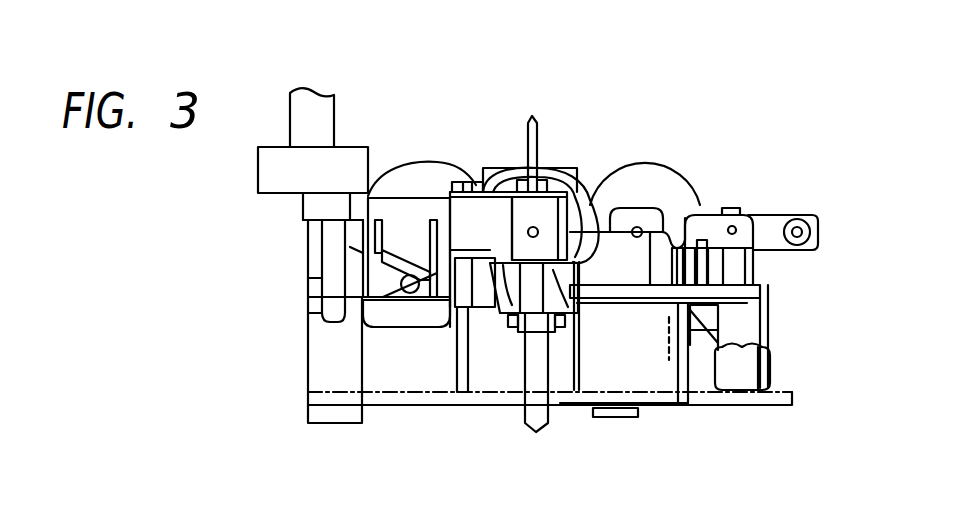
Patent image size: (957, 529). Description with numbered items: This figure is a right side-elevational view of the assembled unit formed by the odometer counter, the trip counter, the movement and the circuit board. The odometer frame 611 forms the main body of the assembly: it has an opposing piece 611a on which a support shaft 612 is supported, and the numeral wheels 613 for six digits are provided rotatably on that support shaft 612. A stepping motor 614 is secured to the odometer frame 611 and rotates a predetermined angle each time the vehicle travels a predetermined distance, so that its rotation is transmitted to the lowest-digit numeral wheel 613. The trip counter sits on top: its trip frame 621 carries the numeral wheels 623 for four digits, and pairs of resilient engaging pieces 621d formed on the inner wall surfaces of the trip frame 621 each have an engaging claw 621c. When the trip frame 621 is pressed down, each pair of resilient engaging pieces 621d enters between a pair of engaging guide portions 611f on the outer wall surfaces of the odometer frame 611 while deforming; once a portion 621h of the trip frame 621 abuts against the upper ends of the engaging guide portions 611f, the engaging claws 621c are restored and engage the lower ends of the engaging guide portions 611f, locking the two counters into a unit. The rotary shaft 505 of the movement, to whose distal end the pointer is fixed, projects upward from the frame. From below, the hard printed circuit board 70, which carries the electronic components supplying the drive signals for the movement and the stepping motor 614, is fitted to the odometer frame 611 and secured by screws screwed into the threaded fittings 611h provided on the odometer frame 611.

The numeral wheels 623 is at (415, 177).
The trip frame 621 is at (473, 208).
The rotary shaft 505 is at (530, 121).
The portion of the trip frame 621h is at (587, 190).
The numeral wheels 613 is at (633, 177).
The opposing piece 611a is at (638, 215).
The support shaft 612 is at (641, 229).
The odometer frame 611 is at (637, 258).
The stepping motor 614 is at (672, 372).
The threaded fittings 611h is at (770, 363).
The hard printed circuit board 70 is at (745, 395).
The engaging guide portions 611f is at (502, 290).
The engaging claw 621c is at (522, 268).
The resilient engaging pieces 621d is at (580, 270).